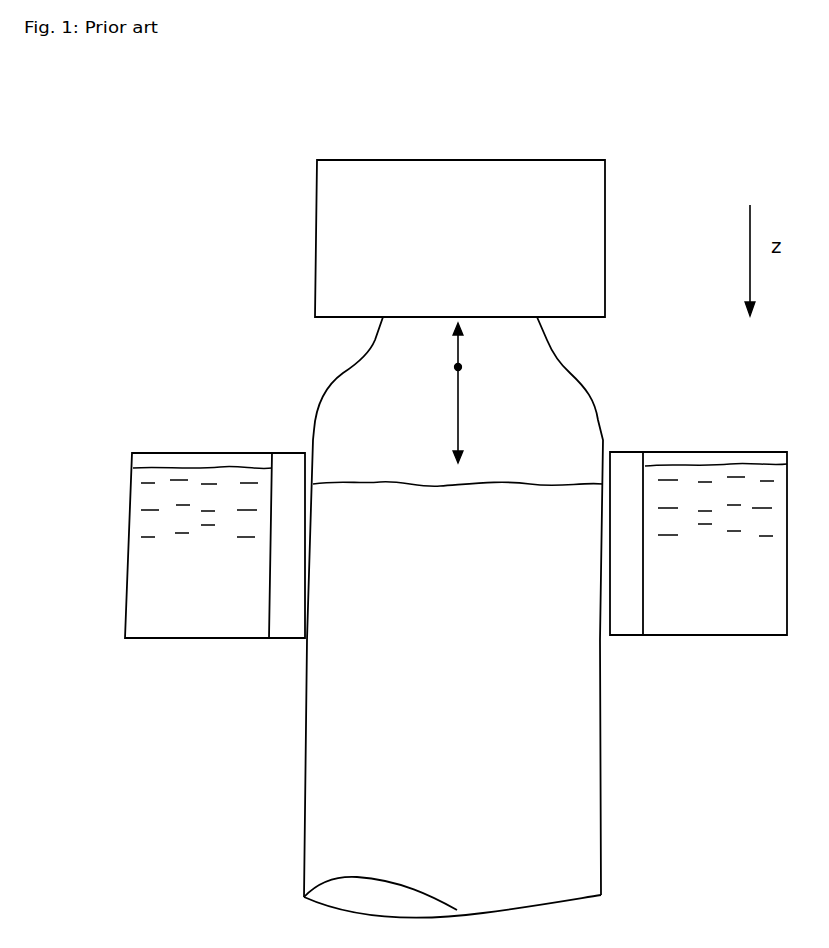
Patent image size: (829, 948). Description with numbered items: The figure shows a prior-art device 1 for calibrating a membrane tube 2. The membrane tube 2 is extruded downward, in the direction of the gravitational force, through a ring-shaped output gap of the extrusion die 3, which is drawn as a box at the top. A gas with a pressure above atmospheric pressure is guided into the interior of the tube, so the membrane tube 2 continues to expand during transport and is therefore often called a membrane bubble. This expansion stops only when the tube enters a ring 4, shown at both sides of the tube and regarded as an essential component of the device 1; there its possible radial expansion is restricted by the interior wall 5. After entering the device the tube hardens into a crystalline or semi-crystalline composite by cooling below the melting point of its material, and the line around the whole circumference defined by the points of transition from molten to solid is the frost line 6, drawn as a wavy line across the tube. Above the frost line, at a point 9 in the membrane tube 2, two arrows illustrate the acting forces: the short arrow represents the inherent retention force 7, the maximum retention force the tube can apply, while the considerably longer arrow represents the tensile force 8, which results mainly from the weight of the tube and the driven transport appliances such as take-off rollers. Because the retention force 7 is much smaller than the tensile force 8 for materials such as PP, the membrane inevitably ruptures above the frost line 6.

The device 1 is at (188, 398).
The membrane tube 2 is at (593, 397).
The extrusion die 3 is at (502, 190).
The ring 4 is at (630, 465).
The interior wall 5 is at (607, 562).
The frost line 6 is at (435, 487).
The inherent retention force 7 is at (460, 343).
The tensile force 8 is at (458, 427).
The point 9 is at (463, 370).